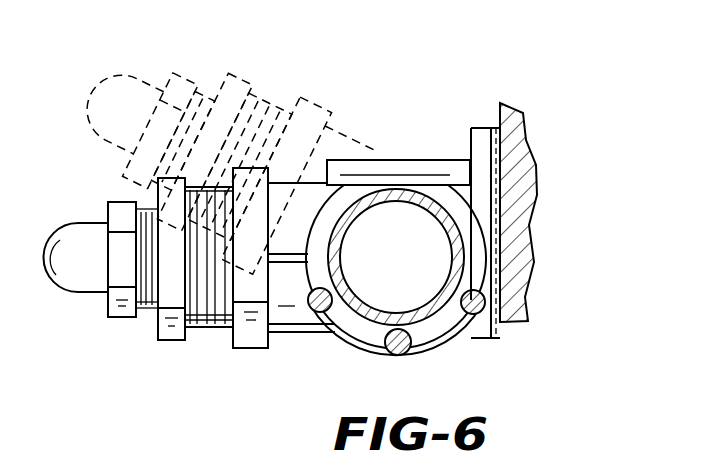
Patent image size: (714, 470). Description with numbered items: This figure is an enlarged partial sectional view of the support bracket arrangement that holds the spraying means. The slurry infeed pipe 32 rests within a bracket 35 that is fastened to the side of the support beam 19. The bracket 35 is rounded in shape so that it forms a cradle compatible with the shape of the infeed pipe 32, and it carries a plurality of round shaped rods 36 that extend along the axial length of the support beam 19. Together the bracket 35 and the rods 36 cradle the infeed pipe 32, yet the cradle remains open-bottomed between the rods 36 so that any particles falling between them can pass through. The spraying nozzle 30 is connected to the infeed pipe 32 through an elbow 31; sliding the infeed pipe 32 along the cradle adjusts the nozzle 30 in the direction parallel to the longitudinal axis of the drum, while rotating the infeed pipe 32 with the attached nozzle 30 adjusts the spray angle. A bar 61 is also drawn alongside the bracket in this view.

The spraying nozzle 30 is at (186, 72).
The elbow 31 is at (350, 138).
The spray infeed pipe 32 is at (482, 216).
The bracket 35 is at (462, 340).
The round shaped rods 36 is at (314, 312).
The support bar 61 is at (420, 158).
The support beam 19 is at (530, 157).